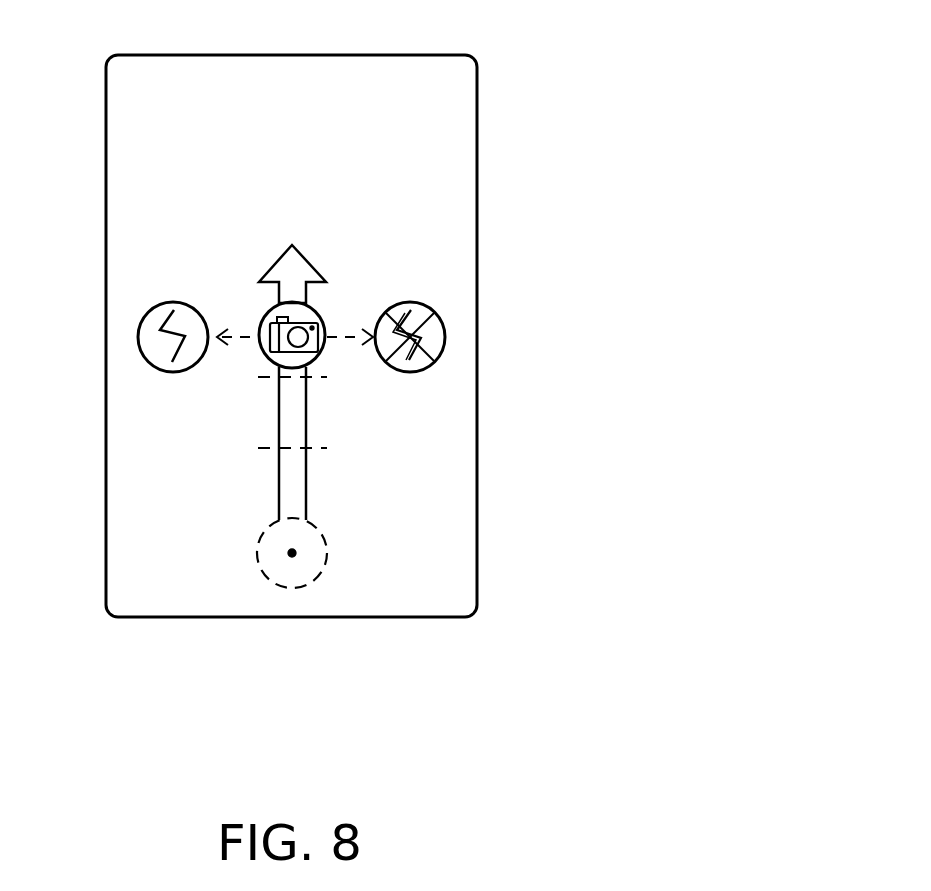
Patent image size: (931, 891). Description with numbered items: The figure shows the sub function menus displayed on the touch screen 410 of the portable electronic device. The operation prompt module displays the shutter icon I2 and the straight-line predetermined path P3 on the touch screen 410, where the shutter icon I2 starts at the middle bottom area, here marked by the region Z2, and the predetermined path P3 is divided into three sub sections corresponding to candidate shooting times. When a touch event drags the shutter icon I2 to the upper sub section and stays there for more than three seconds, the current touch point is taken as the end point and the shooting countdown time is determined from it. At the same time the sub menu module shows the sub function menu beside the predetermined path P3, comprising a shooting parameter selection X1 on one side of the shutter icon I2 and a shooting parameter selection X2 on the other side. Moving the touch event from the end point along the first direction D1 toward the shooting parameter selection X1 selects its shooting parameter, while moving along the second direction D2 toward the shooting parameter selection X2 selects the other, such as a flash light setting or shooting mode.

The touch screen 410 is at (477, 97).
The shutter icon I2 is at (266, 312).
The predetermined path P3 is at (306, 479).
The target zone Z2 is at (322, 568).
The shooting parameter selection X2 is at (138, 337).
The shooting parameter selection X1 is at (445, 338).
The second direction D2 is at (242, 340).
The first direction D1 is at (347, 340).